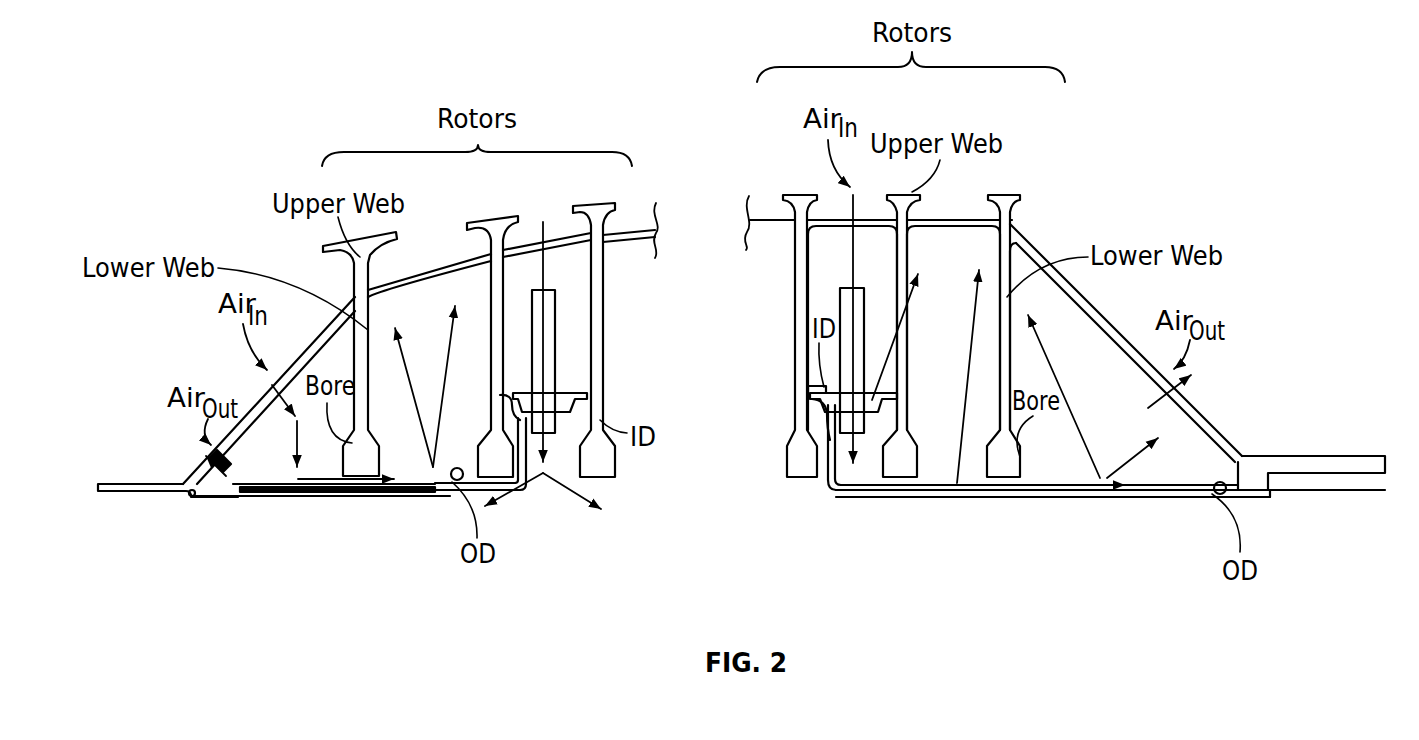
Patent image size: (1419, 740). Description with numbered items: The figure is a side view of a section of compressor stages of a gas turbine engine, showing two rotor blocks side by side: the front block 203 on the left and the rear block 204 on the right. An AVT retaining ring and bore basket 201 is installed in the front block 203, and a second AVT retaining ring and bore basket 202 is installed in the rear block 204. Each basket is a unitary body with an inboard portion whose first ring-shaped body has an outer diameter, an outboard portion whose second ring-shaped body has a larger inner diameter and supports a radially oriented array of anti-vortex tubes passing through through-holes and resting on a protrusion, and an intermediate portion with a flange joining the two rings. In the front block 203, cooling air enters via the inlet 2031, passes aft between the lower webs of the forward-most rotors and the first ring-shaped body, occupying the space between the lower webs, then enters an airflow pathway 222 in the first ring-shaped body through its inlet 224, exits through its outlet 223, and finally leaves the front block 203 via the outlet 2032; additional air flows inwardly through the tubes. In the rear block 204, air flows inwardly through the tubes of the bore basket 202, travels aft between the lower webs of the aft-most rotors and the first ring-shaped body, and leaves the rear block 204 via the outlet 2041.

The AVT retaining ring and bore basket 201 is at (353, 501).
The AVT retaining ring and bore basket 202 is at (1029, 515).
The front block 203 is at (317, 315).
The inlet 2031 is at (271, 383).
The outlet 2032 is at (212, 462).
The rear block 204 is at (1100, 300).
The outlet 2041 is at (1190, 400).
The airflow pathway 222 is at (300, 494).
The outlet 223 is at (233, 497).
The inlet 224 is at (393, 497).